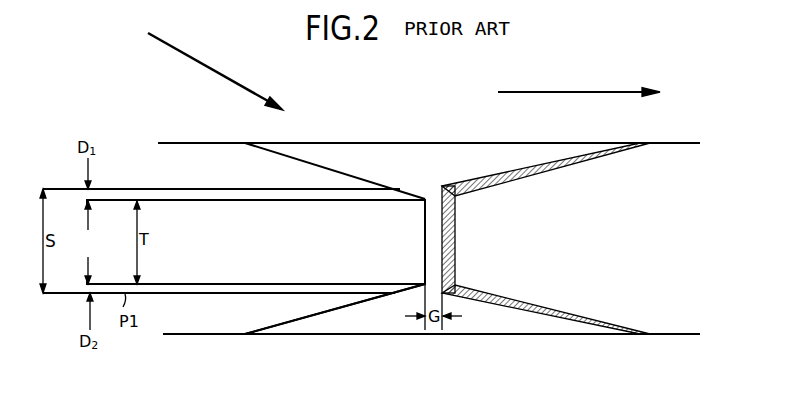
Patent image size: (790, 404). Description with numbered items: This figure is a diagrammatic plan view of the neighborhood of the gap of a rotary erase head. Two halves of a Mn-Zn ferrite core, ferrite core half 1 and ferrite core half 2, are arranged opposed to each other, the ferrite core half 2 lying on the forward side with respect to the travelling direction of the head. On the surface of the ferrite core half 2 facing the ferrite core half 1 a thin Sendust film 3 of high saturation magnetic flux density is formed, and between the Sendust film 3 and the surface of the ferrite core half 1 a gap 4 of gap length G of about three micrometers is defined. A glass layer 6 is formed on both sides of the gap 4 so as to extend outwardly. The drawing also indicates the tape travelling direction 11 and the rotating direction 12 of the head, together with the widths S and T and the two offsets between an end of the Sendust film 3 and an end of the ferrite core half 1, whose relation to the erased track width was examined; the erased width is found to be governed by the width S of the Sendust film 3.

The ferrite core half 1 is at (293, 307).
The ferrite core half 2 is at (682, 165).
The Sendust film 3 is at (500, 307).
The gap 4 is at (436, 205).
The glass layer 6 is at (394, 147).
The tape travelling direction 11 is at (212, 75).
The rotating direction 12 is at (608, 93).